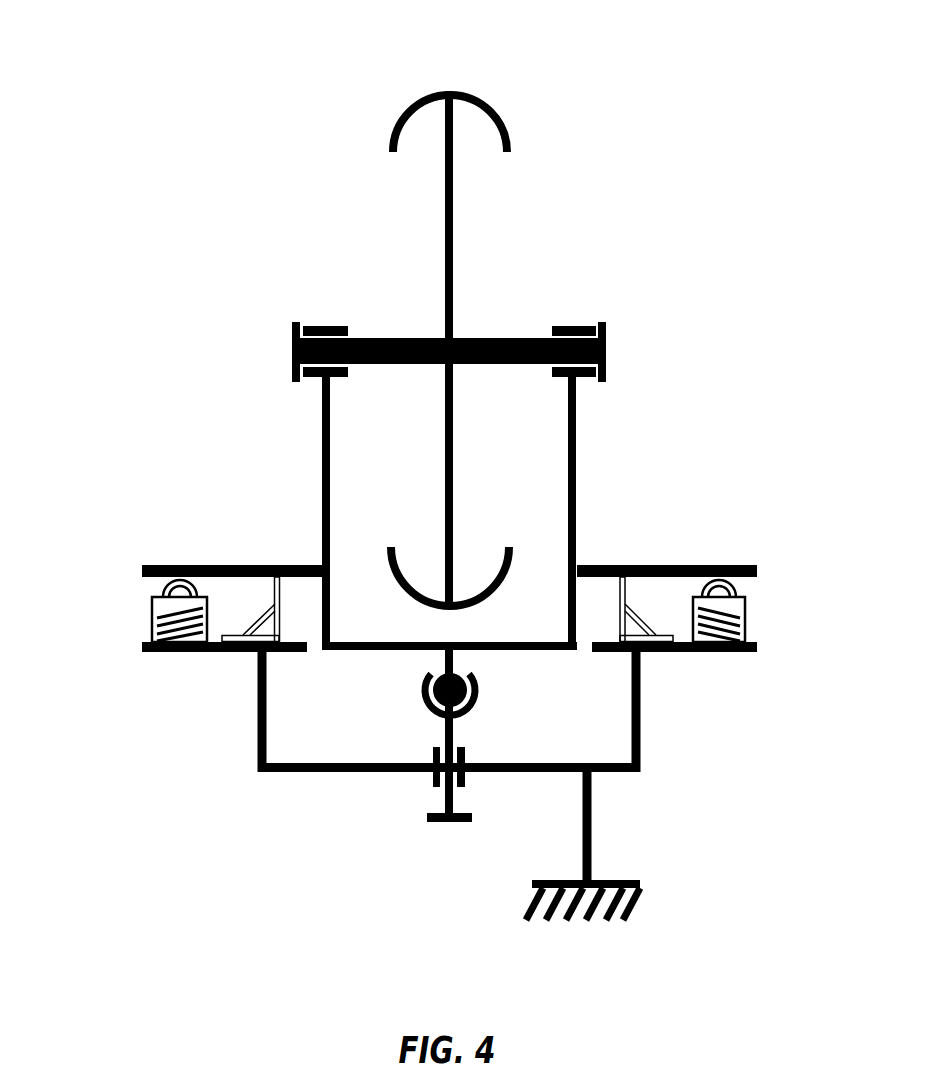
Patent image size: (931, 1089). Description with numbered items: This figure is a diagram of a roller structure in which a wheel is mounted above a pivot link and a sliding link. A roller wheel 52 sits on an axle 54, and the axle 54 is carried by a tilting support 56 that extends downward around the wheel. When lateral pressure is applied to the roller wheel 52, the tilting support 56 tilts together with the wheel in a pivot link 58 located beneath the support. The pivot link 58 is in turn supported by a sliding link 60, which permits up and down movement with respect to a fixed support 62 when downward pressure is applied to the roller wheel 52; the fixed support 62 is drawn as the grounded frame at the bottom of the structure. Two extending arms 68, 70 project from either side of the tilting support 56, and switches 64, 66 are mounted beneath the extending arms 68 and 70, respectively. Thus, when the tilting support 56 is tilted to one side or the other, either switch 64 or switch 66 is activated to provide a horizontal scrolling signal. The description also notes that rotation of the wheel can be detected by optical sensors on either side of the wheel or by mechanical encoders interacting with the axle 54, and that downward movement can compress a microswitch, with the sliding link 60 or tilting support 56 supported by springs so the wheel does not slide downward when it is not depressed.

The roller wheel 52 is at (456, 91).
The axle 54 is at (380, 338).
The tilting support 56 is at (322, 490).
The pivot link 58 is at (478, 692).
The sliding link 60 is at (425, 783).
The fixed support 62 is at (613, 772).
The switch 64 is at (152, 615).
The switch 66 is at (747, 612).
The extending arm 68 is at (235, 565).
The extending arm 70 is at (663, 565).